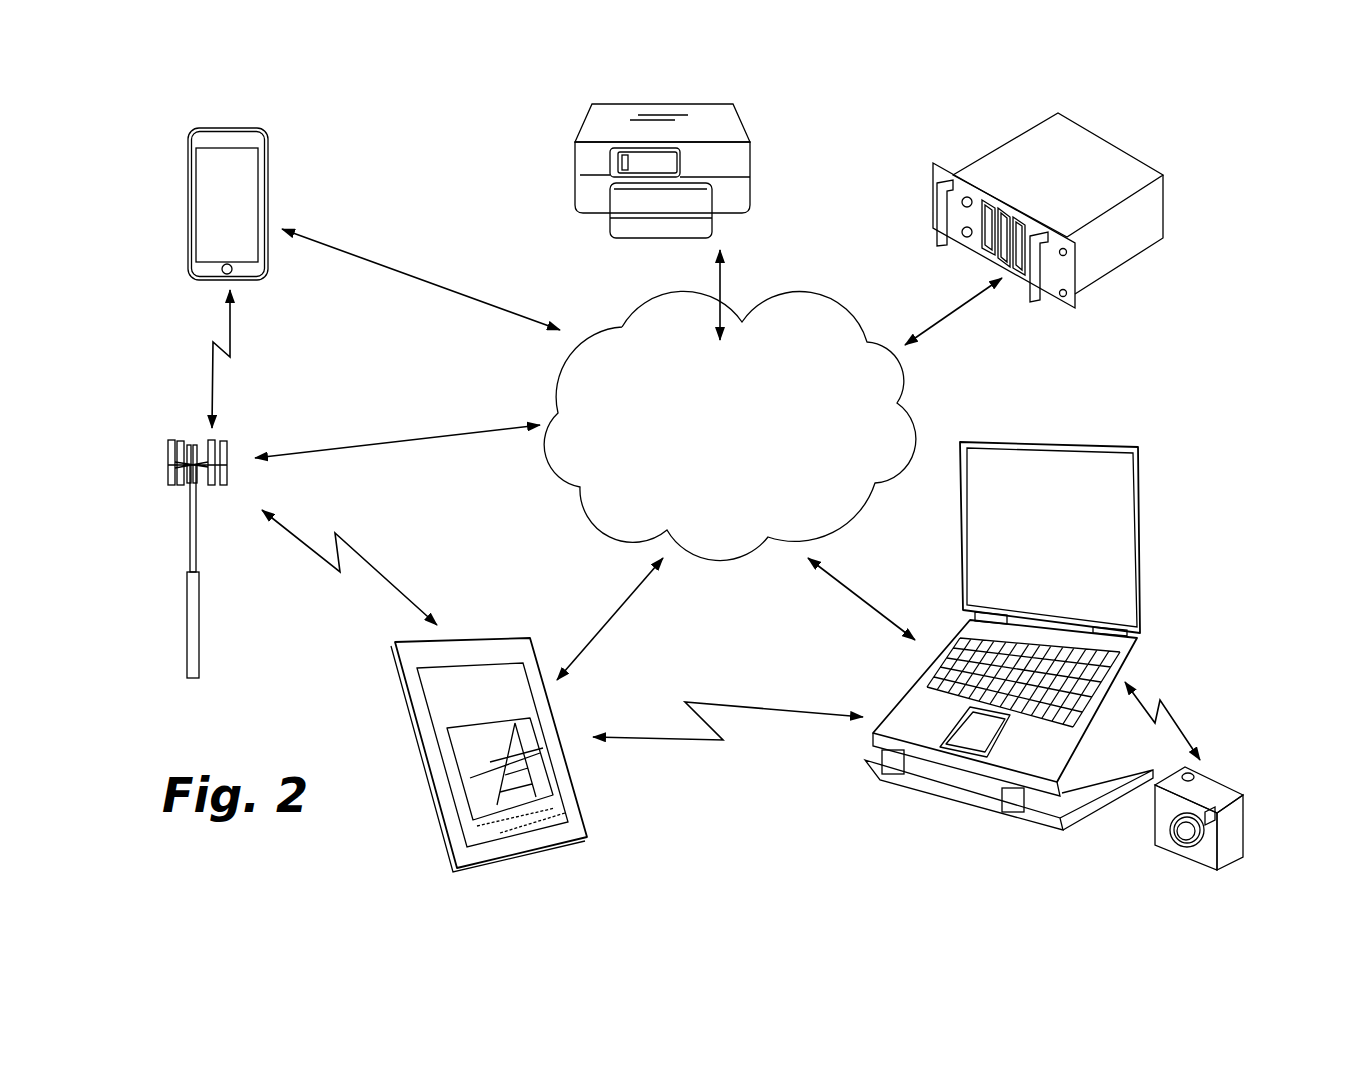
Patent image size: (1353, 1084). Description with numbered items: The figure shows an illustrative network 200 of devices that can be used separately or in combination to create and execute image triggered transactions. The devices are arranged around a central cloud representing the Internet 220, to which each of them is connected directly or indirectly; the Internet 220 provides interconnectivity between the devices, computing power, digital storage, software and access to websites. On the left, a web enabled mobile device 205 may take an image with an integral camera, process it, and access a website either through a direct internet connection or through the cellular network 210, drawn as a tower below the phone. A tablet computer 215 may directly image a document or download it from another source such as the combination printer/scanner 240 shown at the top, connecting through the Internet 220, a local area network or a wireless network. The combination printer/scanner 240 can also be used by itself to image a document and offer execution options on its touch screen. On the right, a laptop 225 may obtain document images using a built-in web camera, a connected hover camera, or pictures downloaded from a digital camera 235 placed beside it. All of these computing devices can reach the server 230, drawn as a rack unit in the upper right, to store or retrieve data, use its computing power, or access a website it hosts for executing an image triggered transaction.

The network 200 is at (1215, 327).
The web enabled mobile device 205 is at (200, 211).
The cellular network 210 is at (192, 530).
The tablet computer 215 is at (410, 683).
The Internet 220 is at (760, 438).
The laptop 225 is at (1145, 517).
The server 230 is at (1005, 150).
The digital camera 235 is at (1222, 800).
The combination printer/scanner 240 is at (752, 138).